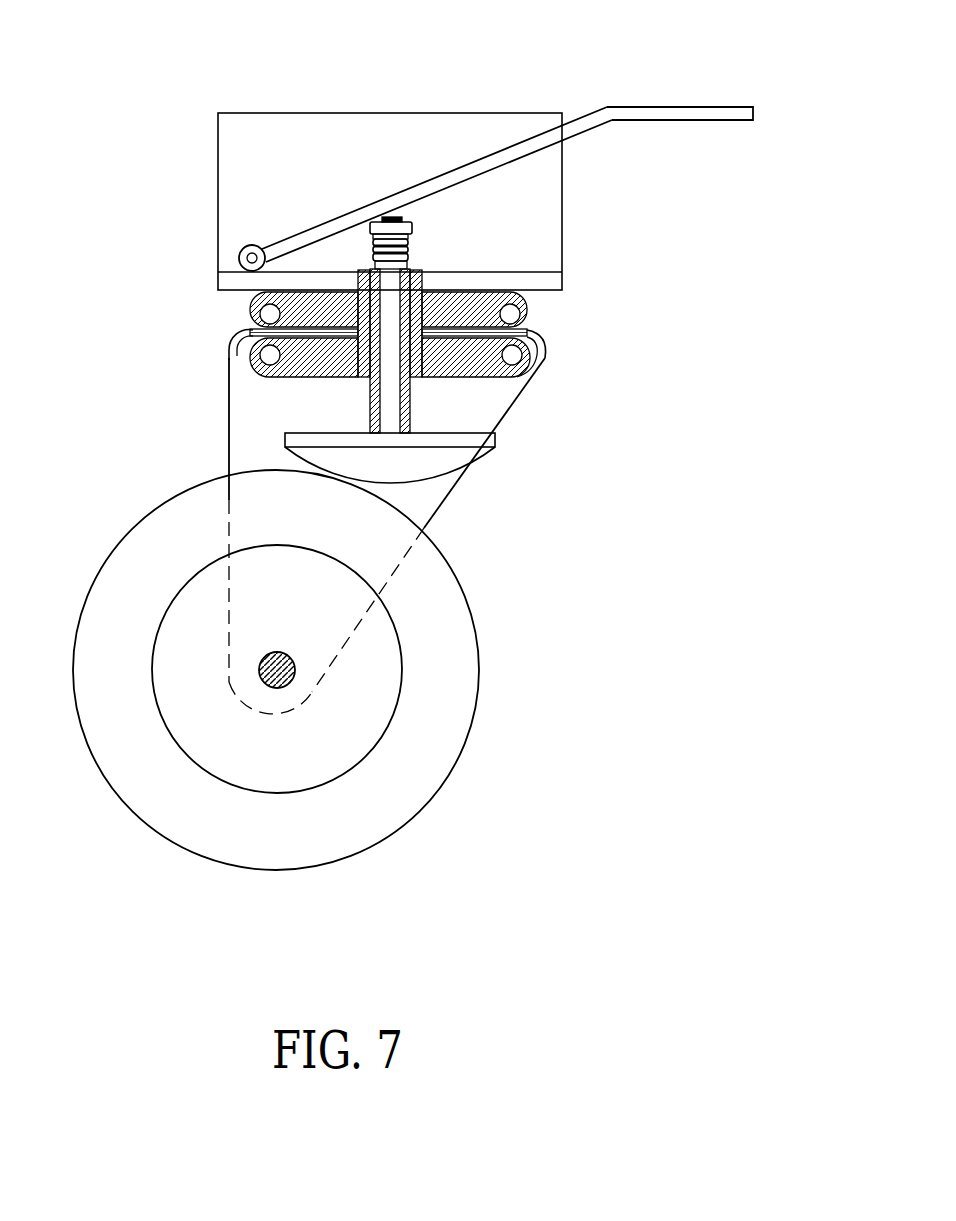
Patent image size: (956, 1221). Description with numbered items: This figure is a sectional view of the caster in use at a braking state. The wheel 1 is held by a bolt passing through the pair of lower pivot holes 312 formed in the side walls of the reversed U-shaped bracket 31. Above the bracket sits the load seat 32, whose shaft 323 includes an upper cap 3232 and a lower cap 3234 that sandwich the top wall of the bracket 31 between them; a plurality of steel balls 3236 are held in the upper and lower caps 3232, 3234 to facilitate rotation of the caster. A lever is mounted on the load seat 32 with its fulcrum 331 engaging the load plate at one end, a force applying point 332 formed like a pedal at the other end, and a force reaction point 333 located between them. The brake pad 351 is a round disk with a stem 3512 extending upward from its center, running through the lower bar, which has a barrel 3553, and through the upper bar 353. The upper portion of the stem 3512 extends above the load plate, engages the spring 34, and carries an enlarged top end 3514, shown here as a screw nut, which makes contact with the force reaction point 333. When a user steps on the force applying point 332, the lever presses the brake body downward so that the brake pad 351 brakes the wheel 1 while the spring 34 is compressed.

The wheel 1 is at (443, 790).
The bracket 31 is at (240, 423).
The load seat 32 is at (204, 136).
The spring 34 is at (410, 255).
The lower pivot holes 312 is at (295, 675).
The shaft 323 is at (675, 330).
The fulcrum 331 is at (246, 250).
The force applying point 332 is at (688, 112).
The force reaction point 333 is at (427, 187).
The brake pad 351 is at (452, 454).
The upper bar 353 is at (370, 270).
The upper cap 3232 is at (535, 305).
The lower cap 3234 is at (517, 372).
The steel balls 3236 is at (253, 350).
The stem 3512 is at (408, 392).
The enlarged top end 3514 is at (412, 229).
The barrel 3553 is at (406, 377).